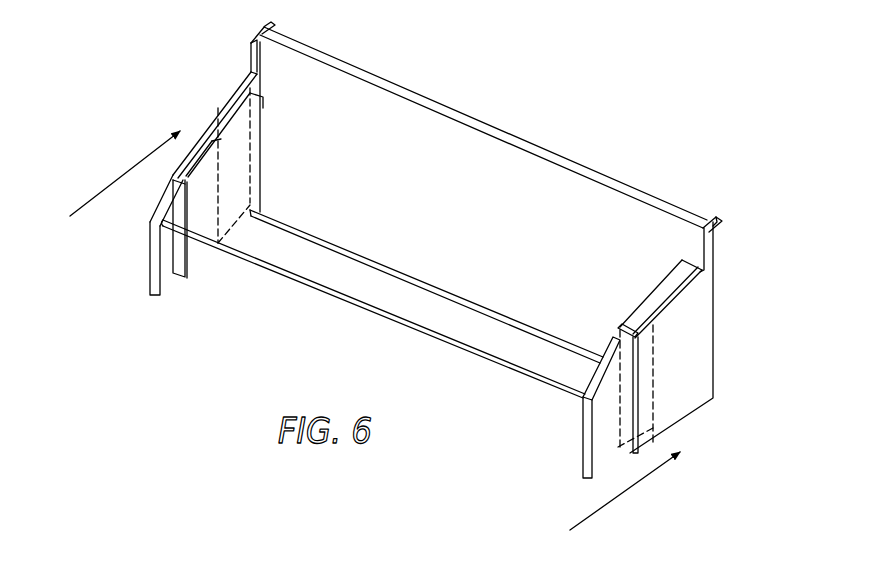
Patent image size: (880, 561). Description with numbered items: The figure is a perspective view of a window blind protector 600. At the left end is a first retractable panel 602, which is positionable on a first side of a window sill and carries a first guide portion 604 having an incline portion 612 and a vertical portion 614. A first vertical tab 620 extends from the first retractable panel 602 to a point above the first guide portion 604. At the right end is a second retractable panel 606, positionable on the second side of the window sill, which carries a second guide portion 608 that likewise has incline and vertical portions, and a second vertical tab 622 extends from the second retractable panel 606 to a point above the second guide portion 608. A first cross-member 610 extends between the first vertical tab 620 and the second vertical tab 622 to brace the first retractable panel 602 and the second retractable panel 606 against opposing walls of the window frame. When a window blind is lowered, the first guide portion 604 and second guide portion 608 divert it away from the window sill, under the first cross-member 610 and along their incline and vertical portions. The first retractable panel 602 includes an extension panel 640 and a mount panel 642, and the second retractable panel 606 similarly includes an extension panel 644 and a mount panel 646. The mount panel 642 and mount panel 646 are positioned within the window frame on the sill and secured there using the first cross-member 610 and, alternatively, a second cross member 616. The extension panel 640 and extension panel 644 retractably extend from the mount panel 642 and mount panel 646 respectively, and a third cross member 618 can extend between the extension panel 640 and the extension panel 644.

The window blind protector 600 is at (684, 176).
The first retractable panel 602 is at (234, 92).
The first guide portion 604 is at (262, 93).
The second retractable panel 606 is at (713, 328).
The second guide portion 608 is at (672, 290).
The first cross-member 610 is at (527, 142).
The incline portion 612 is at (237, 128).
The vertical portion 614 is at (150, 268).
The second cross member 616 is at (446, 290).
The third cross member 618 is at (507, 360).
The first vertical tab 620 is at (252, 38).
The second vertical tab 622 is at (721, 223).
The extension panel 640 is at (150, 236).
The mount panel 642 is at (203, 267).
The extension panel 644 is at (583, 466).
The mount panel 646 is at (687, 393).